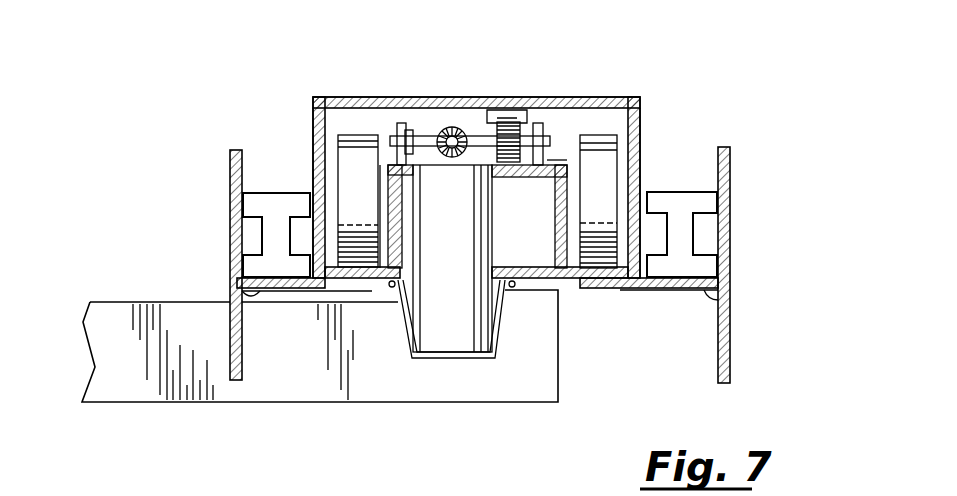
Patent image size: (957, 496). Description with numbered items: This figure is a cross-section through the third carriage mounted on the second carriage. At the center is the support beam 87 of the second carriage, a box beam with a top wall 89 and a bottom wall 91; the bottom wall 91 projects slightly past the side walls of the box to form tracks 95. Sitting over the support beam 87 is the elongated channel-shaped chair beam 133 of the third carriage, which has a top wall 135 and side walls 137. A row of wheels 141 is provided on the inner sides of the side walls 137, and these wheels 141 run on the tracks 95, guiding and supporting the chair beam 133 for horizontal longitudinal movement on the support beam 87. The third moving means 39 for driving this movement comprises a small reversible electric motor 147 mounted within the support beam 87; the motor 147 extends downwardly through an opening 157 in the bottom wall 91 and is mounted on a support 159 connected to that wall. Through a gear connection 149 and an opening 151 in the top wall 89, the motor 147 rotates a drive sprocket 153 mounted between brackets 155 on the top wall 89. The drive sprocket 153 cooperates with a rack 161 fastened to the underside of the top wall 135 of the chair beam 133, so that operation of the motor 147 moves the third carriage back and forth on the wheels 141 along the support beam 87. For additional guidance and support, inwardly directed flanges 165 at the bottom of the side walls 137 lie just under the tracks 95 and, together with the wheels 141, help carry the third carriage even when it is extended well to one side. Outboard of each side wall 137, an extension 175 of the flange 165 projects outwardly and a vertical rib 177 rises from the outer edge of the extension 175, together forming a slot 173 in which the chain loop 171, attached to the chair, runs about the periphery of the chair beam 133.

The third moving means 39 is at (457, 114).
The support beam 87 is at (564, 157).
The top wall 89 is at (568, 187).
The bottom wall 91 is at (560, 289).
The tracks 95 is at (312, 290).
The chair beam 133 is at (309, 93).
The top wall 135 is at (332, 97).
The side walls 137 is at (313, 112).
The wheels 141 is at (338, 140).
The electric motor 147 is at (447, 340).
The gear connection 149 is at (438, 126).
The opening 151 is at (408, 130).
The drive sprocket 153 is at (508, 130).
The brackets 155 is at (398, 127).
The opening 157 is at (500, 308).
The support 159 is at (500, 345).
The rack 161 is at (488, 115).
The flanges 165 is at (360, 292).
The chain loop 171 is at (270, 193).
The slot 173 is at (274, 168).
The extension 175 is at (240, 292).
The vertical rib 177 is at (733, 170).